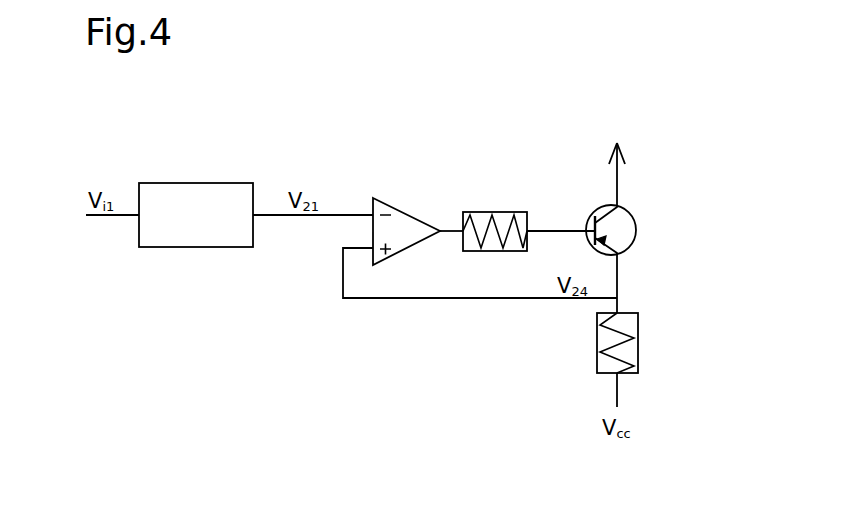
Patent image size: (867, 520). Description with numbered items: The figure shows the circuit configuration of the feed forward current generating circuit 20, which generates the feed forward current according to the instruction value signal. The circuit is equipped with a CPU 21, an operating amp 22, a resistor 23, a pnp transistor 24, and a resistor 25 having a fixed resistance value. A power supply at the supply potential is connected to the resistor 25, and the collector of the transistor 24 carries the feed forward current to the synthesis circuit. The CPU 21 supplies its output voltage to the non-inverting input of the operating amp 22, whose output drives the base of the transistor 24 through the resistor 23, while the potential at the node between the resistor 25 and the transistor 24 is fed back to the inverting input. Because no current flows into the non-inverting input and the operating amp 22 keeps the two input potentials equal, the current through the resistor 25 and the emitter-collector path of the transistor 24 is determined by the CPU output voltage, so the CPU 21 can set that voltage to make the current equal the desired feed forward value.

The feed forward current generating circuit 20 is at (699, 132).
The CPU 21 is at (156, 183).
The operating amp 22 is at (405, 184).
The resistor 23 is at (478, 212).
The pnp transistor 24 is at (636, 230).
The resistor 25 is at (638, 343).